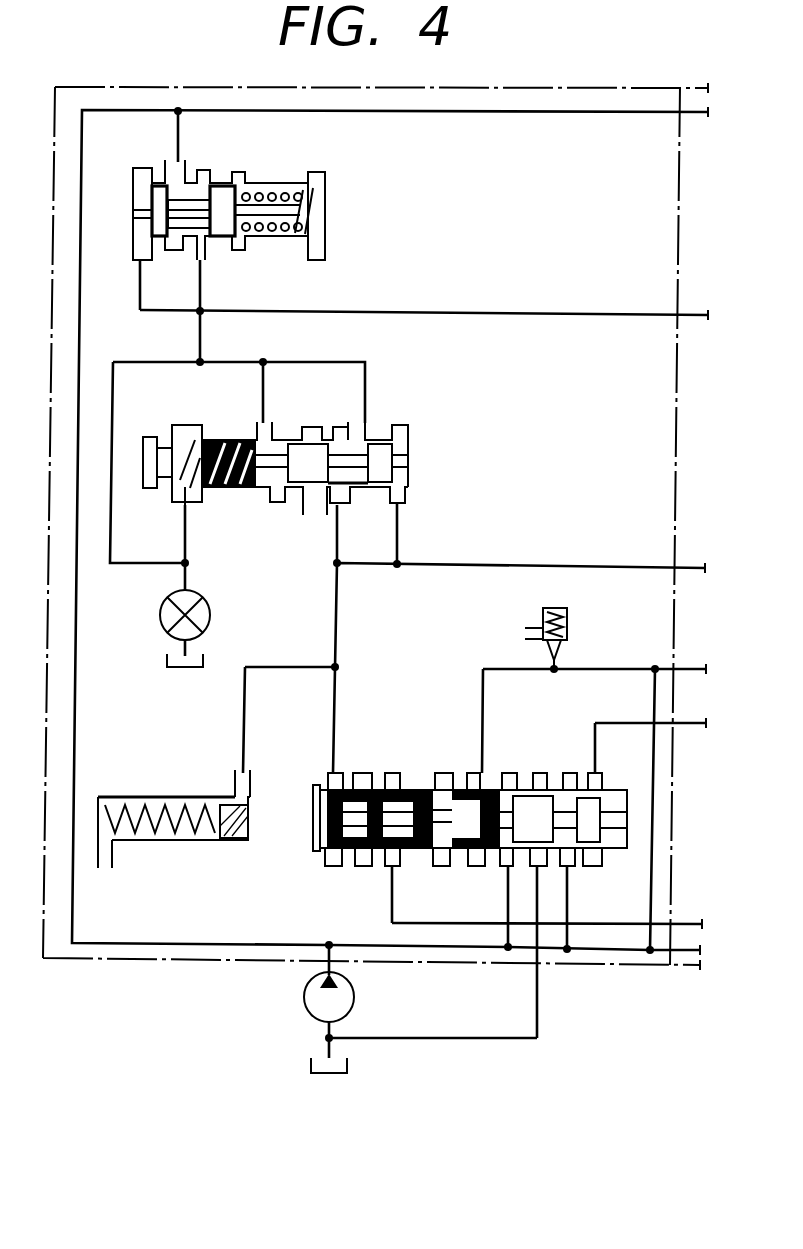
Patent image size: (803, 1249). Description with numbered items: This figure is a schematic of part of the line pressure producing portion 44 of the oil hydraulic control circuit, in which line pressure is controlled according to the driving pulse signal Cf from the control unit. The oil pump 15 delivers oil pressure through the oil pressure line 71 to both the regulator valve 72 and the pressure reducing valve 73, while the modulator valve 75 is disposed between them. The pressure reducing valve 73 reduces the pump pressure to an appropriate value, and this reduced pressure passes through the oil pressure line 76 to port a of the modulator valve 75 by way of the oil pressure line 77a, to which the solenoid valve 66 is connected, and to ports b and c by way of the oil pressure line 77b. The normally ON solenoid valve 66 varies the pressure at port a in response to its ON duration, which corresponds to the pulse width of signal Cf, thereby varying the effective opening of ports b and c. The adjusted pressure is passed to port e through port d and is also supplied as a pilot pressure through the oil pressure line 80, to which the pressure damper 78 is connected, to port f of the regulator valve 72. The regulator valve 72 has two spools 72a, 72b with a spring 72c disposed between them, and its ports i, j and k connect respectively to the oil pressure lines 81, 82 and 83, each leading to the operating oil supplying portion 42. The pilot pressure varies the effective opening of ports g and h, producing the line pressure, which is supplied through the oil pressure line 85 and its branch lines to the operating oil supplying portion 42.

The oil pump 15 is at (305, 999).
The operating oil supplying portion 42 is at (688, 968).
The line pressure producing portion 44 is at (140, 962).
The solenoid valve 66 is at (211, 610).
The oil pressure line 71 is at (78, 713).
The regulator valve 72 is at (296, 839).
The spool 72a is at (568, 782).
The spool 72b is at (410, 790).
The spring 72c is at (447, 775).
The pressure reducing valve 73 is at (292, 170).
The modulator valve 75 is at (313, 474).
The oil pressure line 76 is at (197, 284).
The oil pressure line 77a is at (114, 385).
The oil pressure line 77b is at (338, 361).
The pressure damper 78 is at (170, 797).
The oil pressure line 80 is at (341, 614).
The oil pressure line 81 is at (497, 667).
The oil pressure line 82 is at (616, 722).
The oil pressure line 83 is at (626, 920).
The oil pressure line 85 is at (600, 963).